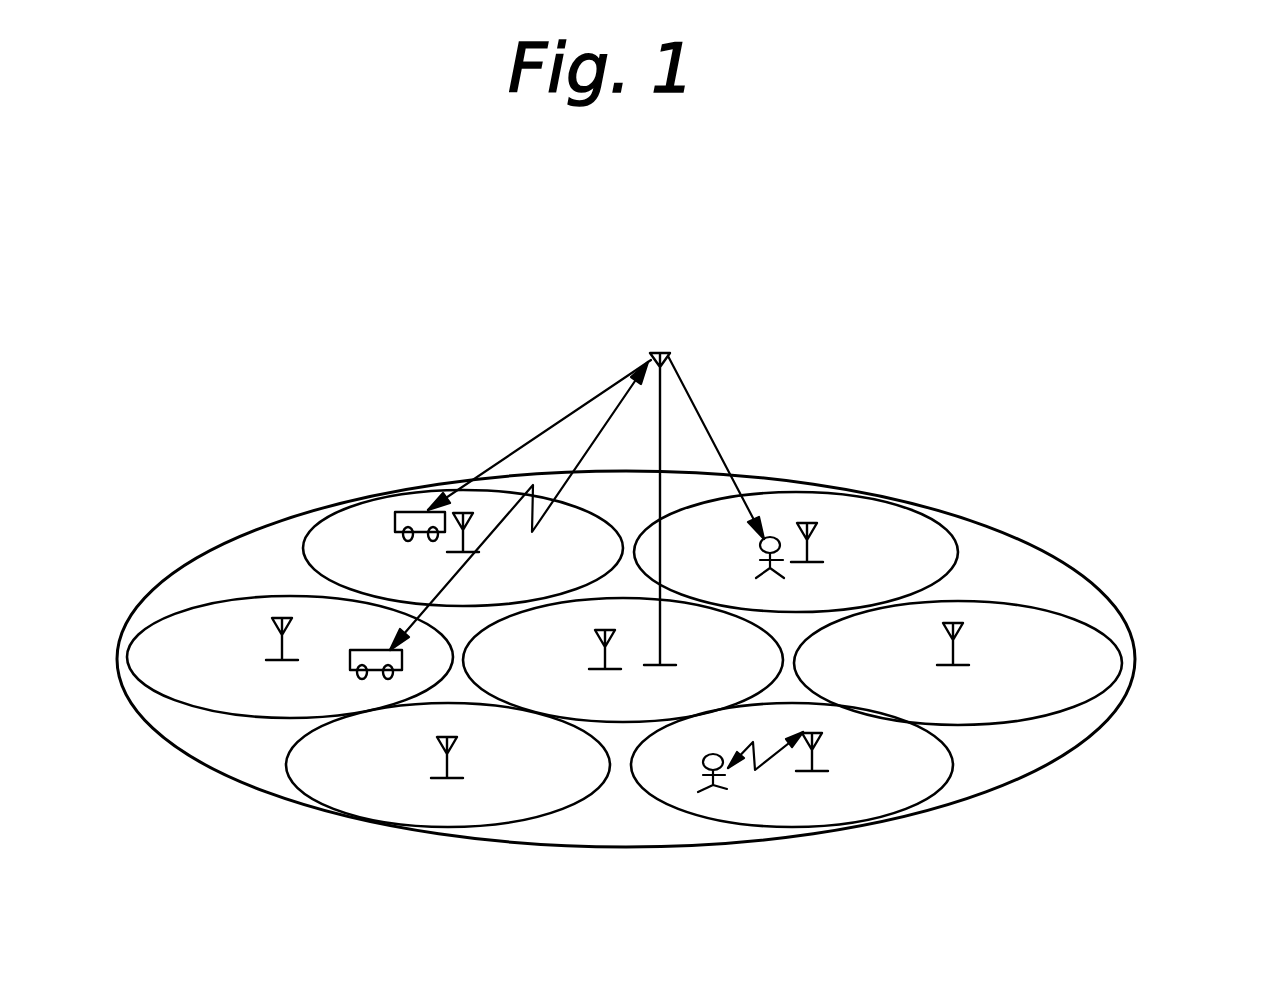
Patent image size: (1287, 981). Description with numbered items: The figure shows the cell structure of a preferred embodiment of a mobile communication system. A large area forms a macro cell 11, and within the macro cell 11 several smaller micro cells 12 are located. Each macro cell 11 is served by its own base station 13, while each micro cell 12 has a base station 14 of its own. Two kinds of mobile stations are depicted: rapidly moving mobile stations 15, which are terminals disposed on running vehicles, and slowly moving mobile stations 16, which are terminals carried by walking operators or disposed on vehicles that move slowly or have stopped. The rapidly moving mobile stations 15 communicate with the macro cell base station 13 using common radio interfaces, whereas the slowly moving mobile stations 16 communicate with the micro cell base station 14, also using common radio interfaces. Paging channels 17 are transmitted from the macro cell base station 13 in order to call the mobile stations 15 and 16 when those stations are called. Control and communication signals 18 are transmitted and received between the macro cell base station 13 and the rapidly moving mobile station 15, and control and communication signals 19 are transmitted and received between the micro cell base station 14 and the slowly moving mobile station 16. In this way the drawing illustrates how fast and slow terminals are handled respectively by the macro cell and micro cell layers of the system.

The macro cell 11 is at (950, 510).
The micro cell 12 is at (1085, 620).
The base station of macro cell 13 is at (661, 412).
The base station of micro cell 14 is at (814, 752).
The rapidly moving mobile station 15 is at (408, 512).
The slowly moving mobile station 16 is at (770, 537).
The paging channel 17 is at (607, 390).
The control and communication signals between macro cell base station and rapidly mo 18 is at (583, 455).
The control and communication signals between micro cell base station and slowly mov 19 is at (775, 753).